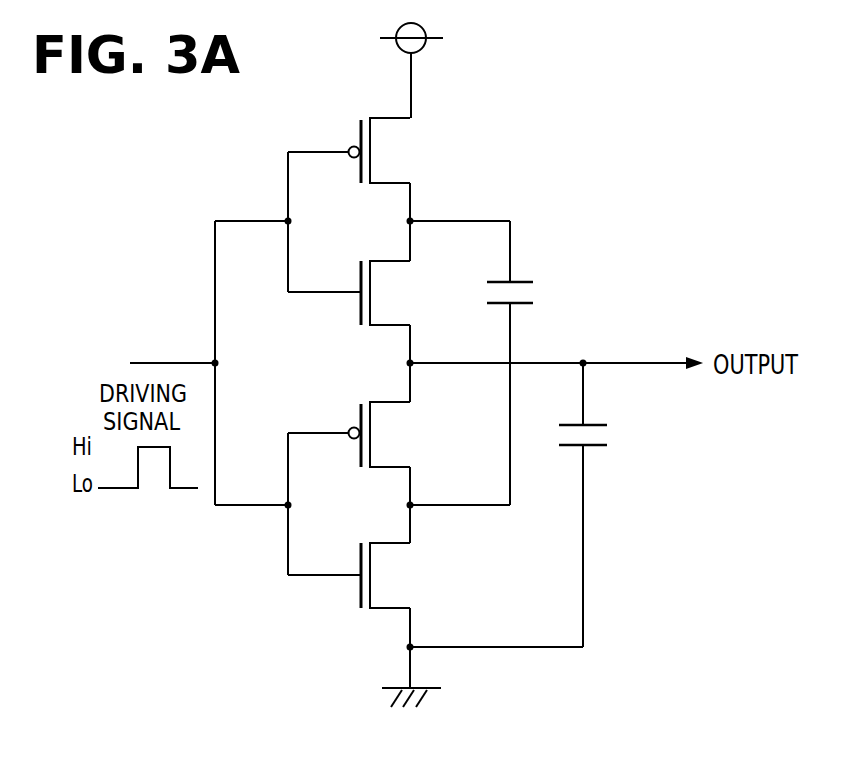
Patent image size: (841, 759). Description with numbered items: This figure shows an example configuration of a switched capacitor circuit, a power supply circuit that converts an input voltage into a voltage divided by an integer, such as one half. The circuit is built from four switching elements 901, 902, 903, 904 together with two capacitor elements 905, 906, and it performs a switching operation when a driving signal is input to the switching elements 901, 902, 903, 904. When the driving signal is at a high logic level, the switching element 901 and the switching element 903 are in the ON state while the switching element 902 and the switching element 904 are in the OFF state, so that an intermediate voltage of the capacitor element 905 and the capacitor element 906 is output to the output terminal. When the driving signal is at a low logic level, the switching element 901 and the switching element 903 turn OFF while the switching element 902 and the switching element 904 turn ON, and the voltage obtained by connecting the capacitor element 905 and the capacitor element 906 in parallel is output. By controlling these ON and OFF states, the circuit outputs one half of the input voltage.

The switching element 901 is at (398, 153).
The switching element 902 is at (398, 293).
The switching element 903 is at (398, 434).
The switching element 904 is at (398, 576).
The capacitor element 905 is at (531, 293).
The capacitor element 906 is at (602, 437).